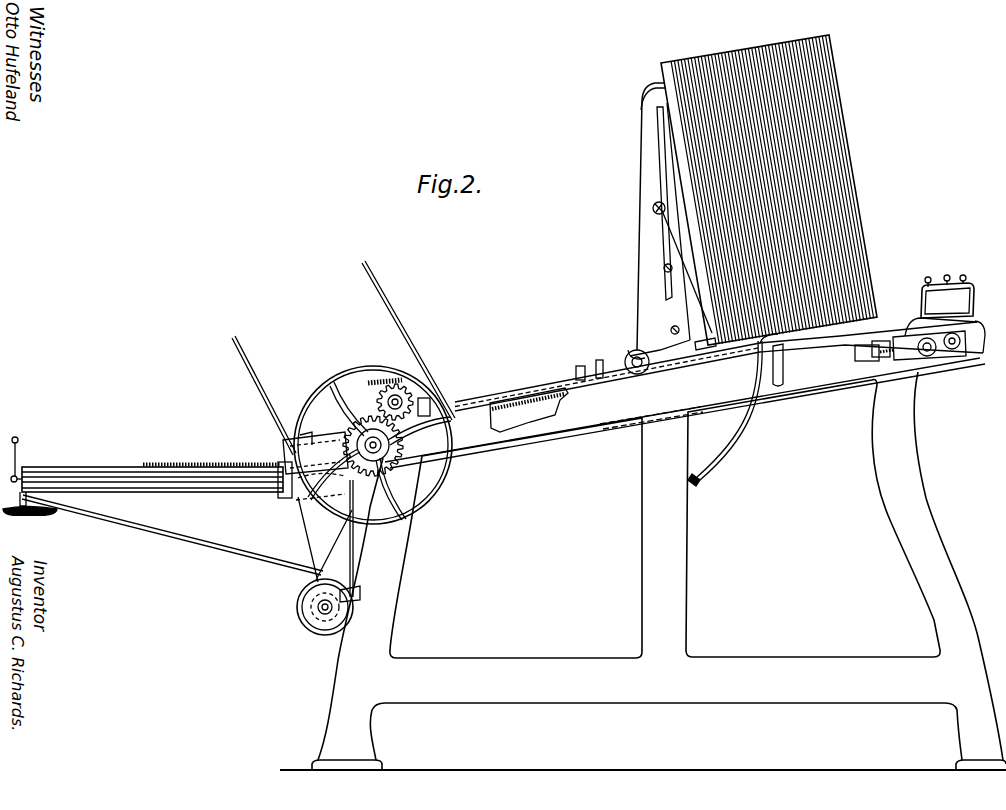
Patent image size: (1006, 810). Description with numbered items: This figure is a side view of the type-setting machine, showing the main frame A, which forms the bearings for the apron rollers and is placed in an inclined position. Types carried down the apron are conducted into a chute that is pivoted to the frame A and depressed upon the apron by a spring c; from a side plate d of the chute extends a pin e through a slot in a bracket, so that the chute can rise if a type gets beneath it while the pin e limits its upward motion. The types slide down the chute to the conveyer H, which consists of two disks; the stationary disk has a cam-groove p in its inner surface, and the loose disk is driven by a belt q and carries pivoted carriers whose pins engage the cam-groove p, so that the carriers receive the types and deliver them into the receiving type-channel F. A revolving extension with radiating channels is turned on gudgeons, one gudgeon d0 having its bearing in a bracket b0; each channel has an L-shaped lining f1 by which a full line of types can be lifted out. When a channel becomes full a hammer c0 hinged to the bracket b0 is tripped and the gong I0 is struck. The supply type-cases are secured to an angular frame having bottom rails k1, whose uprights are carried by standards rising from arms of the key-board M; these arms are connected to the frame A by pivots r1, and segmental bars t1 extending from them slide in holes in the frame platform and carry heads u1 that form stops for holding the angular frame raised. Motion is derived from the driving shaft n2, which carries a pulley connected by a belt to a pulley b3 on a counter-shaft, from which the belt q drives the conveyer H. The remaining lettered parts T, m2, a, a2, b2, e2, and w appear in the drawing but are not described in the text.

The frame A is at (659, 564).
The table T is at (157, 474).
The receiving type-channel F is at (769, 190).
The key-board M is at (916, 322).
The motor terminals m2 is at (945, 276).
The conveyer H is at (343, 458).
The bed rail a is at (720, 366).
The drive wheel a2 is at (373, 445).
The rod b2 is at (408, 356).
The pulley b3 is at (325, 607).
The bracket b0 is at (172, 535).
The spring c is at (637, 357).
The hammer c0 is at (13, 449).
The side plate d is at (326, 605).
The gudgeon d0 is at (27, 462).
The pin e is at (537, 399).
The pinion e2 is at (399, 391).
The L-shaped lining f1 is at (595, 365).
The bottom rail k1 is at (705, 339).
The cam-groove p is at (659, 221).
The pivot r1 is at (682, 260).
The segmental bar t1 is at (740, 410).
The head u1 is at (694, 473).
The rod w is at (264, 398).
The belt q is at (325, 539).
The driving shaft n2 is at (351, 541).
The gong I0 is at (30, 512).